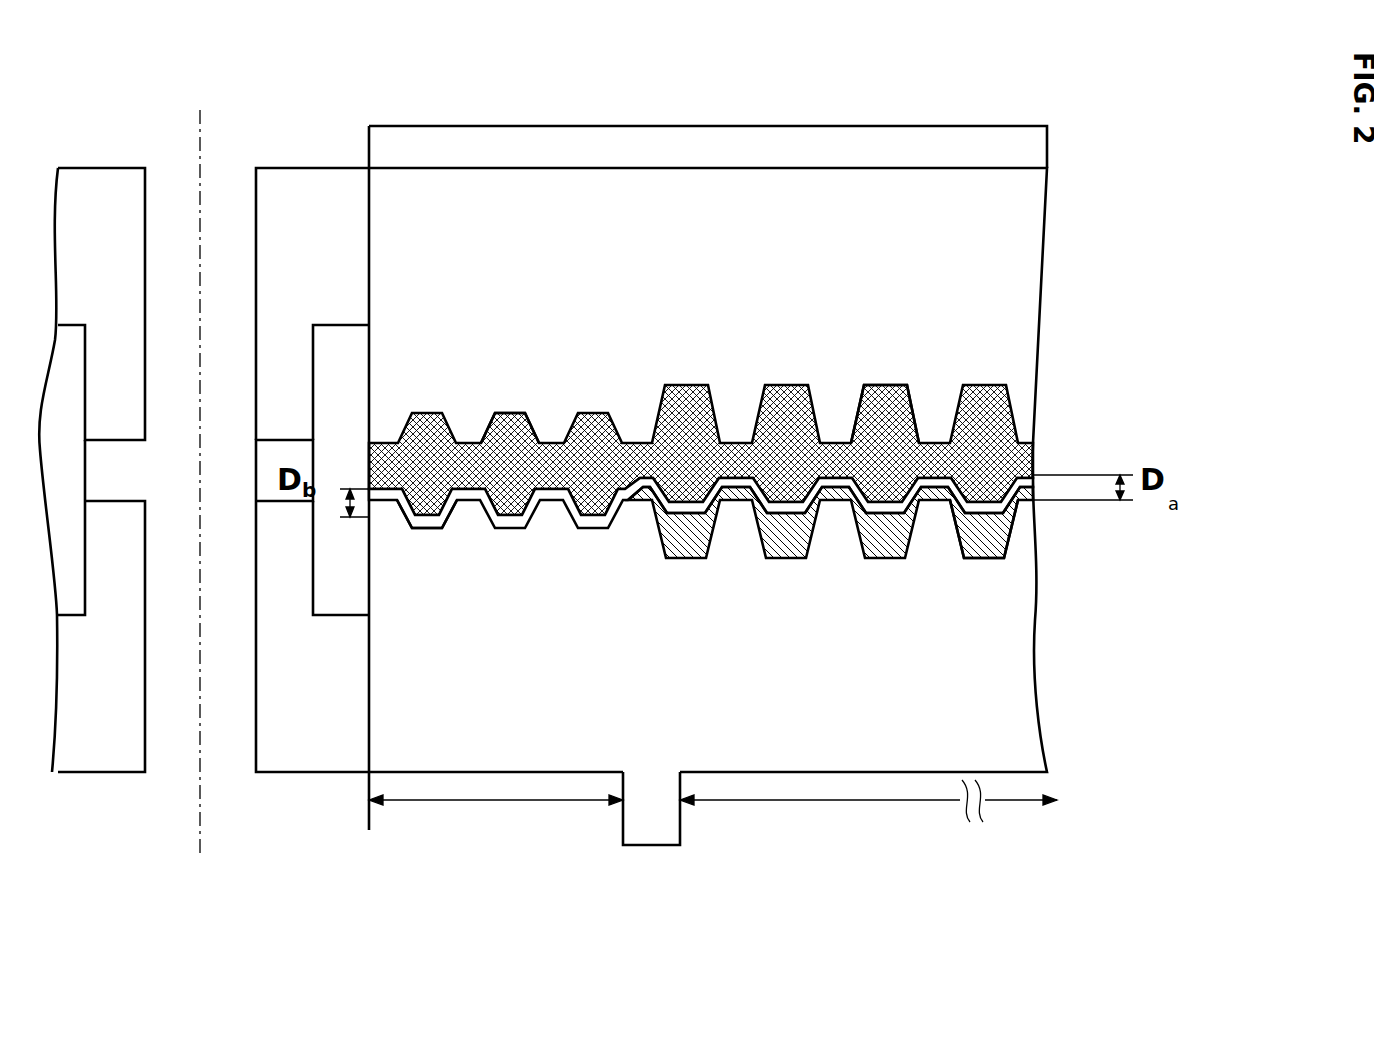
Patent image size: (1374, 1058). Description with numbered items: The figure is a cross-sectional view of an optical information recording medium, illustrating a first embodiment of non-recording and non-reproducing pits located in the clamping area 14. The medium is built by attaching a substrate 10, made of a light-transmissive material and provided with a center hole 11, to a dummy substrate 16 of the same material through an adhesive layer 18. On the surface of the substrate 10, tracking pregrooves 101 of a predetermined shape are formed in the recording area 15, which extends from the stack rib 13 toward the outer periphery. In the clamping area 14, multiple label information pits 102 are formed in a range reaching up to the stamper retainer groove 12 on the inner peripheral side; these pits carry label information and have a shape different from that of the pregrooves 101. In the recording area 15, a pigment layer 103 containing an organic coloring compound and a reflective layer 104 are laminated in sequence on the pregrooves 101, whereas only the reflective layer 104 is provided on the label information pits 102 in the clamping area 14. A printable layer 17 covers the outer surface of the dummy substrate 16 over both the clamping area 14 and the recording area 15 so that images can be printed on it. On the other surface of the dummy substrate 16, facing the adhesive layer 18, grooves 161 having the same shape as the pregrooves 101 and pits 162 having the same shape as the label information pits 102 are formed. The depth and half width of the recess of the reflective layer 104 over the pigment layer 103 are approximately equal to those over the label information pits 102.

The substrate 10 is at (1028, 722).
The center hole 11 is at (160, 757).
The stamper retainer groove 12 is at (369, 585).
The stack rib 13 is at (652, 845).
The clamping area 14 is at (400, 800).
The recording area 15 is at (822, 800).
The dummy substrate 16 is at (1020, 262).
The printable layer 17 is at (1040, 152).
The adhesive layer 18 is at (1033, 425).
The pregroove 101 is at (985, 558).
The label information pit 102 is at (447, 528).
The pigment layer 103 is at (1000, 553).
The reflective layer 104 is at (1033, 470).
The groove 161 is at (883, 385).
The pit 162 is at (492, 413).